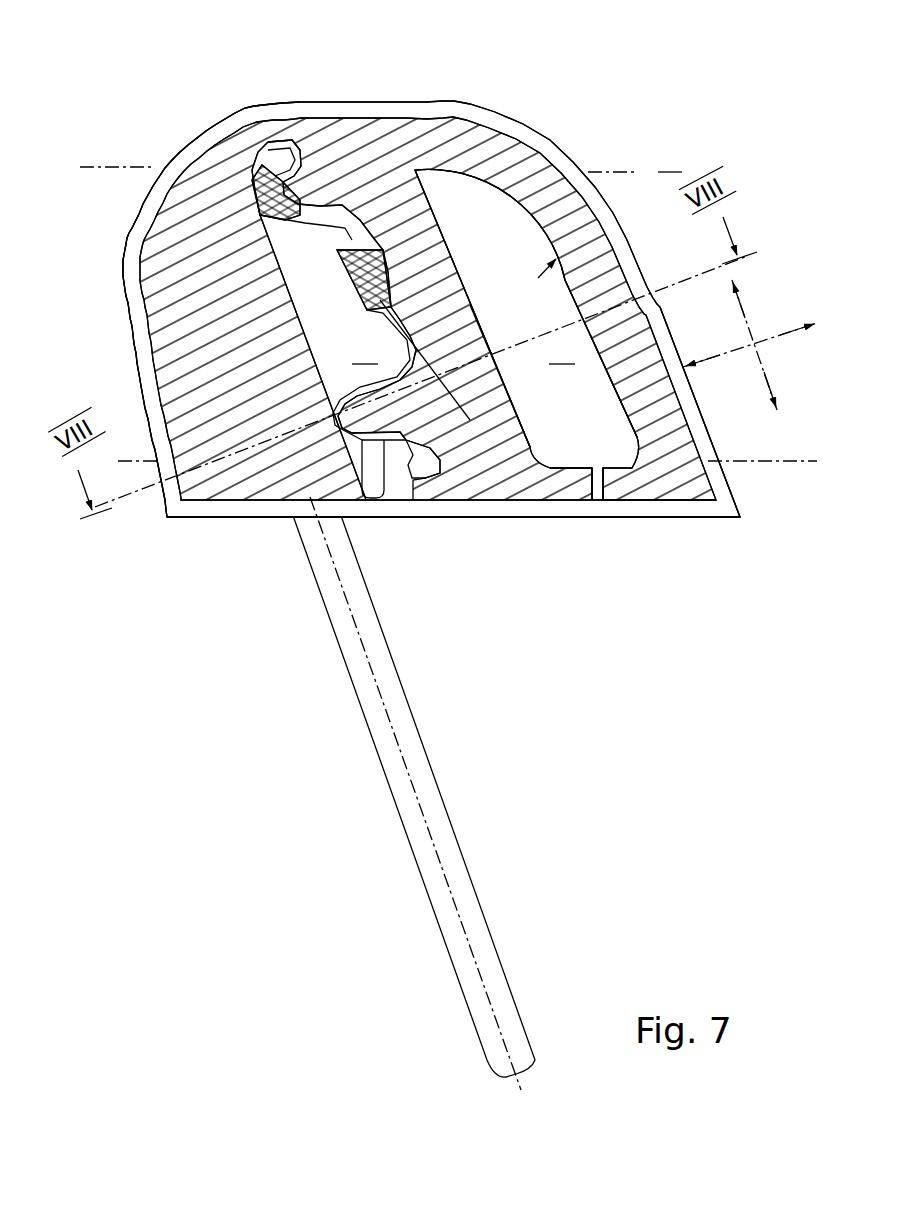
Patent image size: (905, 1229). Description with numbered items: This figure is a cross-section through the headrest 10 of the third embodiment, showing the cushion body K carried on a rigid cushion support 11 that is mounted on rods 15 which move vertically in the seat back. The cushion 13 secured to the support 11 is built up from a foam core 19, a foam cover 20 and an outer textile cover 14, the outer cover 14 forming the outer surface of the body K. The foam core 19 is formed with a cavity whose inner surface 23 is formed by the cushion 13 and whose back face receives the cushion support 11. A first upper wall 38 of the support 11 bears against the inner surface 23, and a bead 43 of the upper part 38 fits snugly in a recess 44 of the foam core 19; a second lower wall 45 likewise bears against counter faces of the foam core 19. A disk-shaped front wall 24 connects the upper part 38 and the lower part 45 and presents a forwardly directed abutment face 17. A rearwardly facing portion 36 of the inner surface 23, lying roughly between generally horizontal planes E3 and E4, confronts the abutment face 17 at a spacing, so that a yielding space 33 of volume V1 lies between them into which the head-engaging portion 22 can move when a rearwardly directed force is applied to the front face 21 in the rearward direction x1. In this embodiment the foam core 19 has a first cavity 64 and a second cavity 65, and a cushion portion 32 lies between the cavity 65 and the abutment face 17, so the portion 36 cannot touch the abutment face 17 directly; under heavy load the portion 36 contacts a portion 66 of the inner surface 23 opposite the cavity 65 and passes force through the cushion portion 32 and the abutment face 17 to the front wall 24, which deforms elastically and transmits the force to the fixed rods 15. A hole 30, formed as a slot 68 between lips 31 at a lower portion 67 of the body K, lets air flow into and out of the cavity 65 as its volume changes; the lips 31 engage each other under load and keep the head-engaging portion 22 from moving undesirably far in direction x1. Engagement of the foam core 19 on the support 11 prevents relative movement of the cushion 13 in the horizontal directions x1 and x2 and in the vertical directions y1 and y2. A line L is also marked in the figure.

The headrest 10 is at (185, 106).
The cushion support 11 is at (285, 234).
The cushion 13 is at (246, 466).
The outer textile cover 14 is at (130, 340).
The rods 15 is at (410, 738).
The abutment face 17 is at (436, 231).
The foam core 19 is at (172, 232).
The foam cover 20 is at (134, 272).
The head-engaging front face 21 is at (735, 490).
The head-engaging portion 22 is at (672, 426).
The inner surface 23 is at (573, 289).
The front wall 24 is at (357, 292).
The hole 30 is at (585, 477).
The lips 31 is at (590, 481).
The cushion portion 32 is at (438, 338).
The space 33 is at (527, 334).
The rearwardly facing portion 36 is at (610, 393).
The upper wall 38 is at (256, 196).
The bead 43 is at (268, 139).
The recess 44 is at (294, 138).
The lower wall 45 is at (404, 488).
The first cavity 64 is at (319, 357).
The second cavity 65 is at (550, 217).
The inner surface portion 66 is at (506, 386).
The lower portion 67 is at (672, 483).
The slot 68 is at (598, 486).
The cushion body K is at (160, 146).
The volume V1 is at (487, 257).
The horizontal plane E3 is at (534, 230).
The horizontal plane E4 is at (806, 465).
The longitudinal axis L is at (647, 173).
The rearward direction x1 is at (750, 345).
The horizontal direction x2 is at (799, 314).
The vertical direction y1 is at (754, 336).
The vertical direction y2 is at (785, 391).